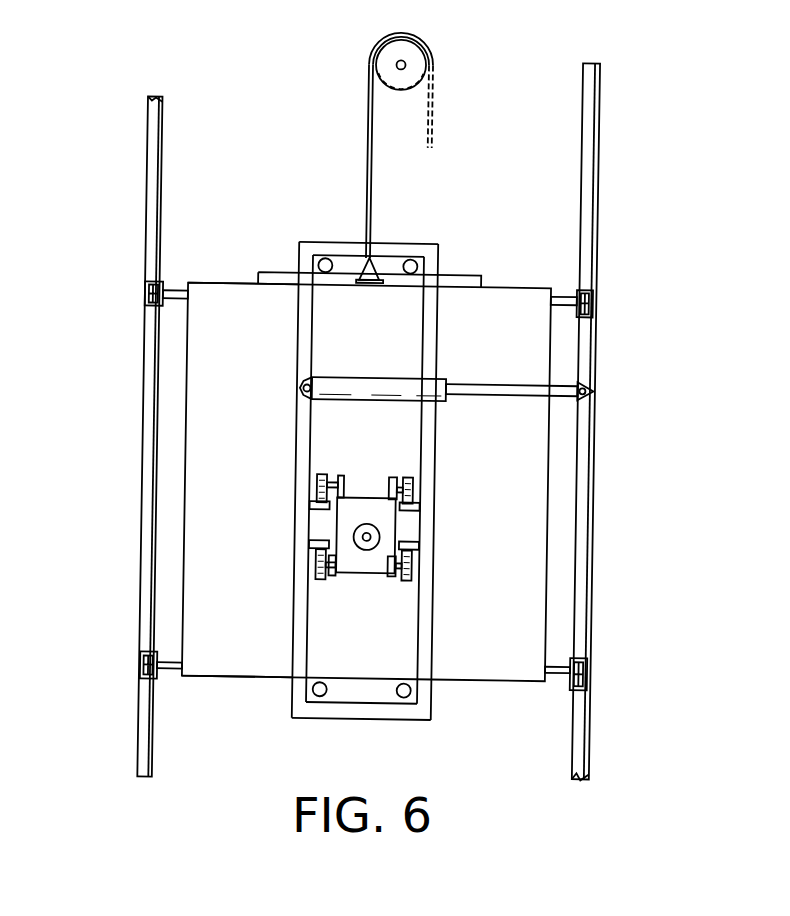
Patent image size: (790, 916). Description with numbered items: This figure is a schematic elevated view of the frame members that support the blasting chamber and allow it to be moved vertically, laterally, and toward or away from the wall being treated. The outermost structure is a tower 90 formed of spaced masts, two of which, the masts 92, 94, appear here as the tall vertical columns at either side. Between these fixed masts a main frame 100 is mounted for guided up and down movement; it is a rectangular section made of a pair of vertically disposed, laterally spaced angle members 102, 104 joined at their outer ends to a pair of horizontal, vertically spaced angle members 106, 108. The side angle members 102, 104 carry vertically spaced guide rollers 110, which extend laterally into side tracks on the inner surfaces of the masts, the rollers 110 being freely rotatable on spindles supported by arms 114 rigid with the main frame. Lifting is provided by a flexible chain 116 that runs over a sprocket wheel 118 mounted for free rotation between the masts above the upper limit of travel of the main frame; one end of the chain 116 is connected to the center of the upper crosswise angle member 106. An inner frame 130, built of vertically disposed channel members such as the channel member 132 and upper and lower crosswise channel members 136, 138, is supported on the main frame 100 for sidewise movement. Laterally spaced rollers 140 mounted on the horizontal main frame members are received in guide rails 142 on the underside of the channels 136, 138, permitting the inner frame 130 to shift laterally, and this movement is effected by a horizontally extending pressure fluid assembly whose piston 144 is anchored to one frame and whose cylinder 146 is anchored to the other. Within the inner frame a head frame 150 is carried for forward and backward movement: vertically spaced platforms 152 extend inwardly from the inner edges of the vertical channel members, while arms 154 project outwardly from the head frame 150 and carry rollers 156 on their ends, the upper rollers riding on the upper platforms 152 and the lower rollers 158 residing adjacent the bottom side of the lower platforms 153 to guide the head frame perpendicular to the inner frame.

The tower 90 is at (142, 192).
The mast 92 is at (593, 536).
The mast 94 is at (147, 470).
The main frame 100 is at (513, 289).
The angle member 102 is at (184, 431).
The angle member 104 is at (552, 458).
The angle member 106 is at (212, 285).
The angle member 108 is at (235, 679).
The guide rollers 110 is at (144, 306).
The arms 114 is at (167, 290).
The chain 116 is at (366, 135).
The sprocket wheel 118 is at (398, 50).
The inner frame 130 is at (295, 601).
The channel member 132 is at (297, 339).
The channel member 136 is at (406, 248).
The channel member 138 is at (357, 723).
The rollers 140 is at (318, 263).
The guide rails 142 is at (324, 248).
The piston 144 is at (518, 367).
The cylinder 146 is at (381, 378).
The head frame 150 is at (362, 573).
The platforms 152 is at (315, 509).
The lower platforms 153 is at (408, 538).
The arms 154 is at (344, 474).
The rollers 156 is at (317, 479).
The lower rollers 158 is at (415, 574).